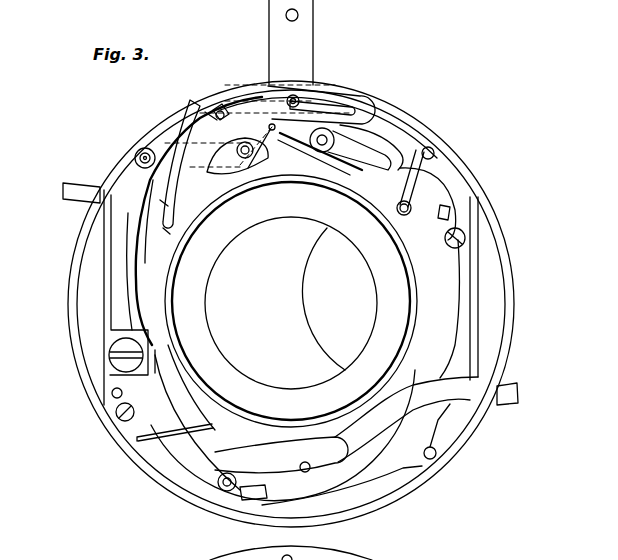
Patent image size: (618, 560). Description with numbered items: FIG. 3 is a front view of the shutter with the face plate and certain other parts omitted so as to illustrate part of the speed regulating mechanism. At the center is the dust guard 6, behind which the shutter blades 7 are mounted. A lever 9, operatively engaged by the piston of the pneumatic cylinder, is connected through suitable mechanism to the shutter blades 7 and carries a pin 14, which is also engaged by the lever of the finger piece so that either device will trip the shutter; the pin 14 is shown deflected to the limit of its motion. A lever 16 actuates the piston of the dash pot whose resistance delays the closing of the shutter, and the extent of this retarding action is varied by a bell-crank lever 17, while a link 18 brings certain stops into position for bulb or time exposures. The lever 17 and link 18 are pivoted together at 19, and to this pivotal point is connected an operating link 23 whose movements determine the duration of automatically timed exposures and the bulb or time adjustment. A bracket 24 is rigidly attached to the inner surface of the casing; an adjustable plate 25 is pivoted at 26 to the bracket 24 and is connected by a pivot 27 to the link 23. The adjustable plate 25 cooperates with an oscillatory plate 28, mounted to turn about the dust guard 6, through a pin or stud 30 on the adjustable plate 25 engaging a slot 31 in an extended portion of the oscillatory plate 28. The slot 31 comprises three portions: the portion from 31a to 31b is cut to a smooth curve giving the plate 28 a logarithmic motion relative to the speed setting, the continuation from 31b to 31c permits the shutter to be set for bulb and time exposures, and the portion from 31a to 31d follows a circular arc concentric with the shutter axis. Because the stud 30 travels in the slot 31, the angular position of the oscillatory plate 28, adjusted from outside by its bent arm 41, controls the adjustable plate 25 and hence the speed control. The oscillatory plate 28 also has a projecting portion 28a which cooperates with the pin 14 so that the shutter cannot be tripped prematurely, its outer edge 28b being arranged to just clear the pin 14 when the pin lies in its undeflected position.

The dust guard 6 is at (291, 301).
The shutter blades 7 is at (291, 303).
The lever 9 is at (70, 183).
The pin 14 is at (405, 215).
The lever 16 is at (416, 418).
The bell-crank lever 17 is at (118, 316).
The link 18 is at (167, 142).
The pivot 19 is at (136, 154).
The operating link 23 is at (153, 168).
The bracket 24 is at (336, 100).
The adjustable plate 25 is at (271, 124).
The pivot 26 is at (318, 90).
The pivot 27 is at (245, 160).
The oscillatory plate 28 is at (274, 359).
The projecting portion 28a is at (439, 257).
The outer edge 28b is at (456, 301).
The pin or stud 30 is at (219, 110).
The slot 31 is at (203, 130).
The slot point 31a is at (214, 110).
The slot point 31b is at (167, 197).
The slot point 31c is at (170, 225).
The slot point 31d is at (362, 113).
The arm 41 is at (291, 42).